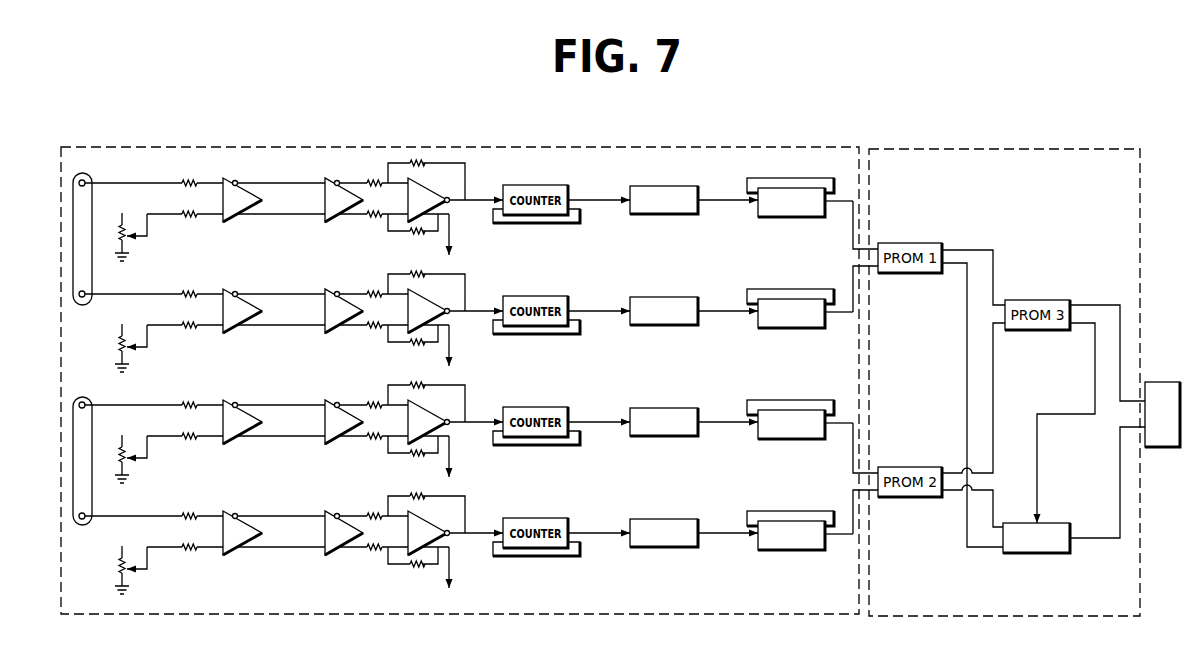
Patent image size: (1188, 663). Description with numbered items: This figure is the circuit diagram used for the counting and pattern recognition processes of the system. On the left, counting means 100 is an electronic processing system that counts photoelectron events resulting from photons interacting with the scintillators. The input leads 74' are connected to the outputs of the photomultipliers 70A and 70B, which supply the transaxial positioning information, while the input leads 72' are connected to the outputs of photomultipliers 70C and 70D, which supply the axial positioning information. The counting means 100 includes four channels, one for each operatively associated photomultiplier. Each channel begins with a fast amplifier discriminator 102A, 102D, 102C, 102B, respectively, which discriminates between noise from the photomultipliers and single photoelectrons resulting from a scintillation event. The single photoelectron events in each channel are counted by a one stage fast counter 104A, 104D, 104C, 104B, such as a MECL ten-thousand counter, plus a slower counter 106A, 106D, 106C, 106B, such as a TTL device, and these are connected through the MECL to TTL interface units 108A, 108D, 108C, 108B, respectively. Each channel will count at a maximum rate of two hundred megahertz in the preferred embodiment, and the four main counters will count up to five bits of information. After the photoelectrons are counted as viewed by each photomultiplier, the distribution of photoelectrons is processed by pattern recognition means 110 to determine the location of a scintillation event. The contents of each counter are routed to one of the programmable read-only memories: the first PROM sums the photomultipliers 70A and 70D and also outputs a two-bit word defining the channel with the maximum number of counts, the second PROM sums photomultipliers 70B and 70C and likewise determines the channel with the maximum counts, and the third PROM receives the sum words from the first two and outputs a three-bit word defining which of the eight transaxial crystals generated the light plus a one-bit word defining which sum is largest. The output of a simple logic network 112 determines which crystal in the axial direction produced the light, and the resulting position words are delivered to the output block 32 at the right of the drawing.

The input leads 74' is at (86, 209).
The input leads 72' is at (85, 502).
The photomultiplier 70A is at (151, 211).
The photomultiplier 70D is at (151, 322).
The photomultiplier 70C is at (151, 433).
The photomultiplier 70B is at (151, 544).
The fast amplifier discriminator 102A is at (249, 176).
The fast amplifier discriminator 102D is at (250, 287).
The fast amplifier discriminator 102C is at (250, 398).
The fast amplifier discriminator 102B is at (248, 509).
The fast counter 104A is at (527, 185).
The fast counter 104D is at (527, 296).
The fast counter 104C is at (527, 407).
The fast counter 104B is at (527, 518).
The MECL to TTL interface unit 108A is at (651, 186).
The MECL to TTL interface unit 108D is at (651, 297).
The MECL to TTL interface unit 108C is at (651, 408).
The MECL to TTL interface unit 108B is at (651, 519).
The slower counter 106A is at (782, 178).
The slower counter 106D is at (778, 289).
The slower counter 106C is at (778, 400).
The slower counter 106B is at (778, 511).
The counting means 100 is at (583, 146).
The pattern recognition means 110 is at (966, 149).
The simple logic network 112 is at (1051, 519).
The output device 32 is at (1160, 382).